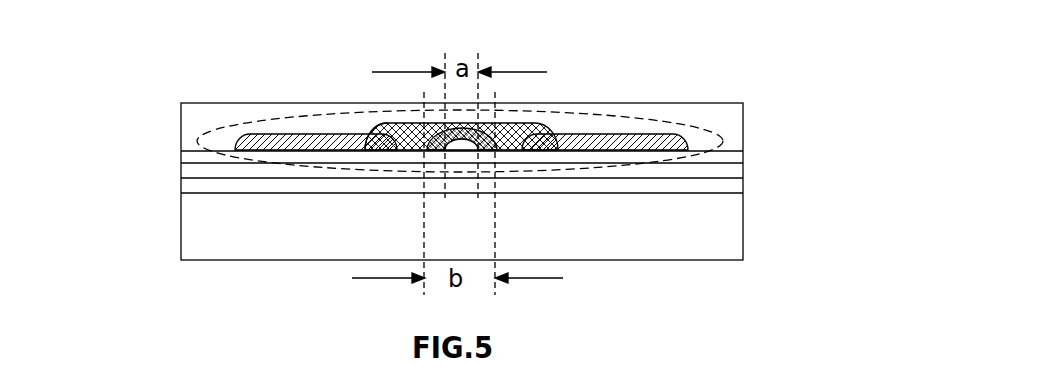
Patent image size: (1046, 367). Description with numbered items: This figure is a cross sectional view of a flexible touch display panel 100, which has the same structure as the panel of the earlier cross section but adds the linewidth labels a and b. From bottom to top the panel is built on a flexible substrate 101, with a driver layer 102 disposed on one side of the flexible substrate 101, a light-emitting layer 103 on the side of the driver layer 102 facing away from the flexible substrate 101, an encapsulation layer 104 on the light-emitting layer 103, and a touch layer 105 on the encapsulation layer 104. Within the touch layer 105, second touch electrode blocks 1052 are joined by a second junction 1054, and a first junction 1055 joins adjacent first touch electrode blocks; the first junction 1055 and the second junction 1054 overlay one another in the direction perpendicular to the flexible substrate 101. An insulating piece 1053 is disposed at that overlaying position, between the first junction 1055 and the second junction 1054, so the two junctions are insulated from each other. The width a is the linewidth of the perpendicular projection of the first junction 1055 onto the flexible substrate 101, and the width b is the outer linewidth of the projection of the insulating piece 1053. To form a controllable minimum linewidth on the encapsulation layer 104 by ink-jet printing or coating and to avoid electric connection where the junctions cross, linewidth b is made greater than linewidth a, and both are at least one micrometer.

The flexible touch display panel 100 is at (128, 47).
The flexible substrate 101 is at (202, 238).
The driver layer 102 is at (187, 191).
The light-emitting layer 103 is at (187, 173).
The encapsulation layer 104 is at (187, 153).
The touch layer 105 is at (723, 142).
The second touch electrode block 1052 is at (282, 145).
The insulating piece 1053 is at (510, 133).
The second junction 1054 is at (392, 133).
The first junction 1055 is at (470, 148).